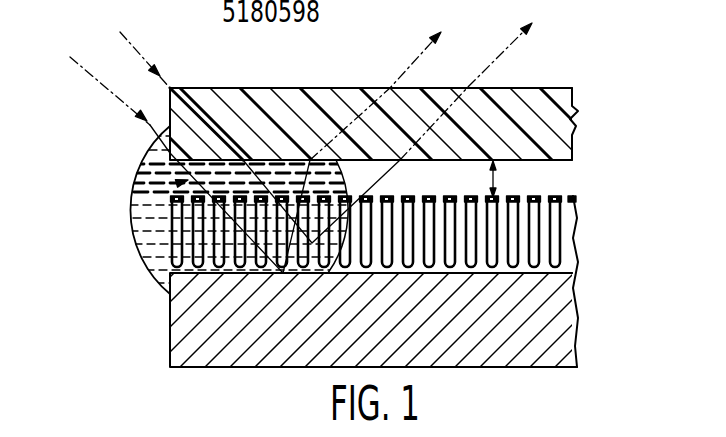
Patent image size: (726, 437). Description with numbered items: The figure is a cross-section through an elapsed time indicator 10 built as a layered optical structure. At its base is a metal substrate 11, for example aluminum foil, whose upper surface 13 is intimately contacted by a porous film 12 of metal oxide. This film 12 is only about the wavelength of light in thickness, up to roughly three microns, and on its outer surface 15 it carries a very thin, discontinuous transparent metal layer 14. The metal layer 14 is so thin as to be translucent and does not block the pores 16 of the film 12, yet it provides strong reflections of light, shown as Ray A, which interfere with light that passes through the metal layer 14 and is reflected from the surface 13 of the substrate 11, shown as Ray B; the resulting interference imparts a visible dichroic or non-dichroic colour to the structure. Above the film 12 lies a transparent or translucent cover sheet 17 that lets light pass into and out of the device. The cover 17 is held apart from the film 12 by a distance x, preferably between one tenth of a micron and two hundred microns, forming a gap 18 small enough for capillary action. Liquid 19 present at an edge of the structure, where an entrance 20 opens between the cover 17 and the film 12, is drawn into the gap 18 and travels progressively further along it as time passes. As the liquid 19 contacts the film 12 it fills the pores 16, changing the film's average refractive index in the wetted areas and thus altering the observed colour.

The indicator 10 is at (600, 75).
The metal substrate 11 is at (590, 342).
The porous film 12 is at (576, 250).
The surface 13 is at (576, 290).
The discontinuous transparent metal layer 14 is at (576, 200).
The outer surface 15 is at (576, 226).
The pores 16 is at (545, 200).
The cover sheet 17 is at (572, 110).
The gap 18 is at (442, 191).
The liquid 19 is at (150, 252).
The entrance 20 is at (165, 183).